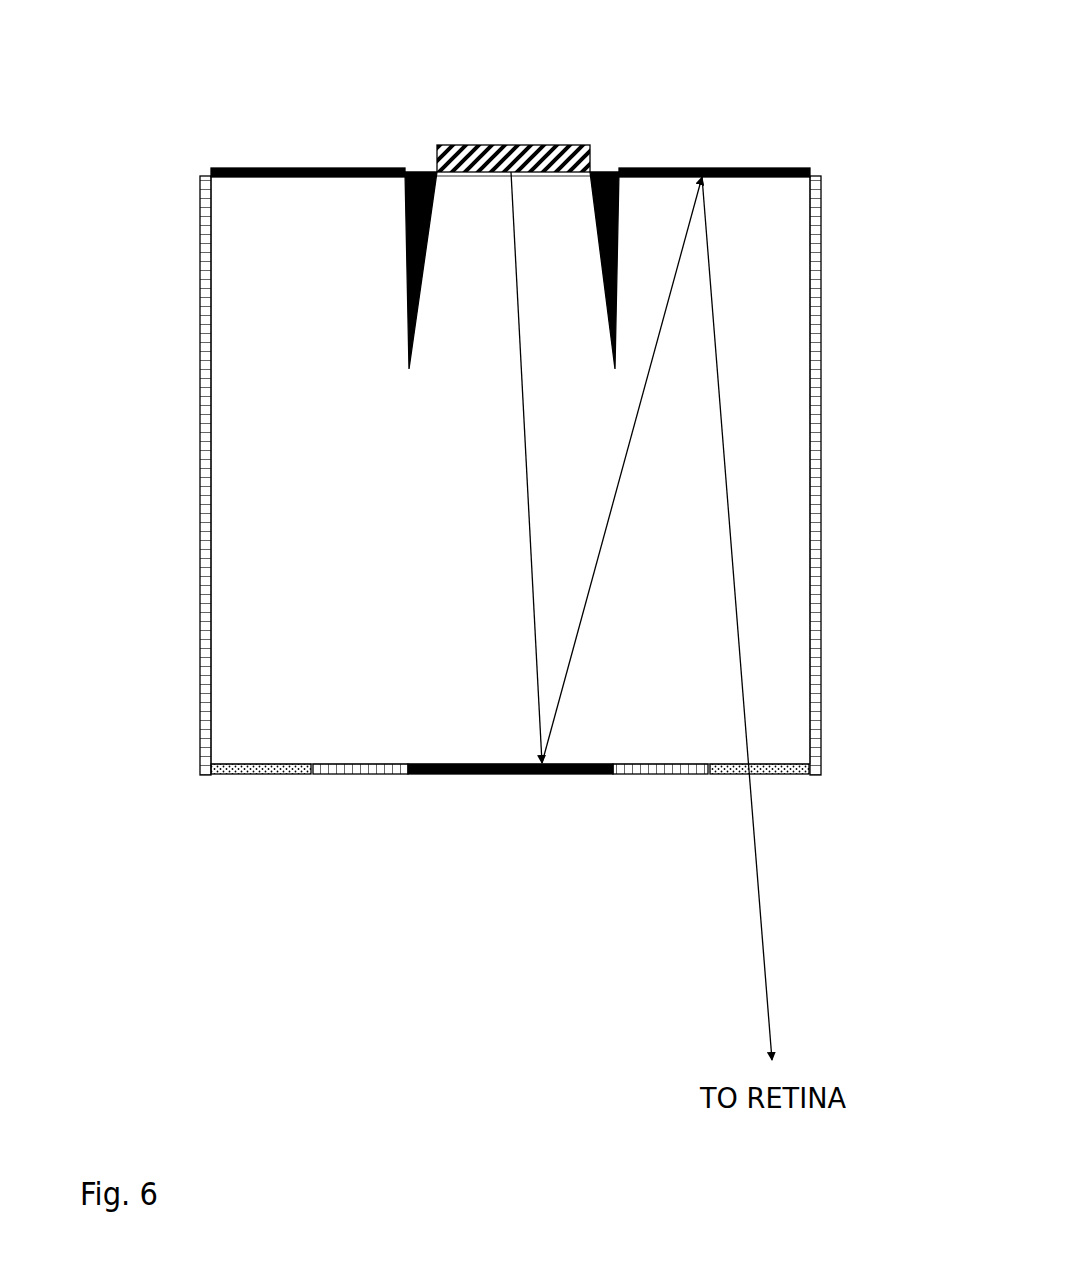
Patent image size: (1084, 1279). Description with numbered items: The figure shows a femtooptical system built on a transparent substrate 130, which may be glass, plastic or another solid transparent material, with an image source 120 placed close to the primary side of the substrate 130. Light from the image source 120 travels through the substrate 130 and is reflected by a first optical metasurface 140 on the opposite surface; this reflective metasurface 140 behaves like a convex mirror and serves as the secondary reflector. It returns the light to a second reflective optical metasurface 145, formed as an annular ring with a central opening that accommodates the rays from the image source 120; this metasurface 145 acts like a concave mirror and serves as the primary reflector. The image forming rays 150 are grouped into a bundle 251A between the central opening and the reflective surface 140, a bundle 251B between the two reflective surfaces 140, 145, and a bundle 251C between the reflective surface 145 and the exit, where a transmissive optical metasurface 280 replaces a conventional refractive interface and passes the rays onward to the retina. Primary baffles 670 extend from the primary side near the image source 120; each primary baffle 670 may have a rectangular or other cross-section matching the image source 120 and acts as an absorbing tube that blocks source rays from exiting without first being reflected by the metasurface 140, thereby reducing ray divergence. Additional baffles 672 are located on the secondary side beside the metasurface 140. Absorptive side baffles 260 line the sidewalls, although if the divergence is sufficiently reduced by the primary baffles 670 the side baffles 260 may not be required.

The image source 120 is at (510, 145).
The transparent substrate 130 is at (510, 470).
The first optical metasurface 140 is at (495, 776).
The second reflective optical metasurface 145 is at (240, 168).
The image forming rays 150 is at (699, 912).
The bundle of rays between the central opening and reflective surface 140 251A is at (548, 467).
The bundle of rays between the two reflective surfaces 251B is at (622, 470).
The bundle of rays between reflective surface 145 and the exit surface 251C is at (742, 470).
The side baffle 260 is at (200, 338).
The transmissive optical metasurface 280 is at (772, 775).
The primary baffle 670 is at (420, 172).
The baffle 672 is at (664, 776).